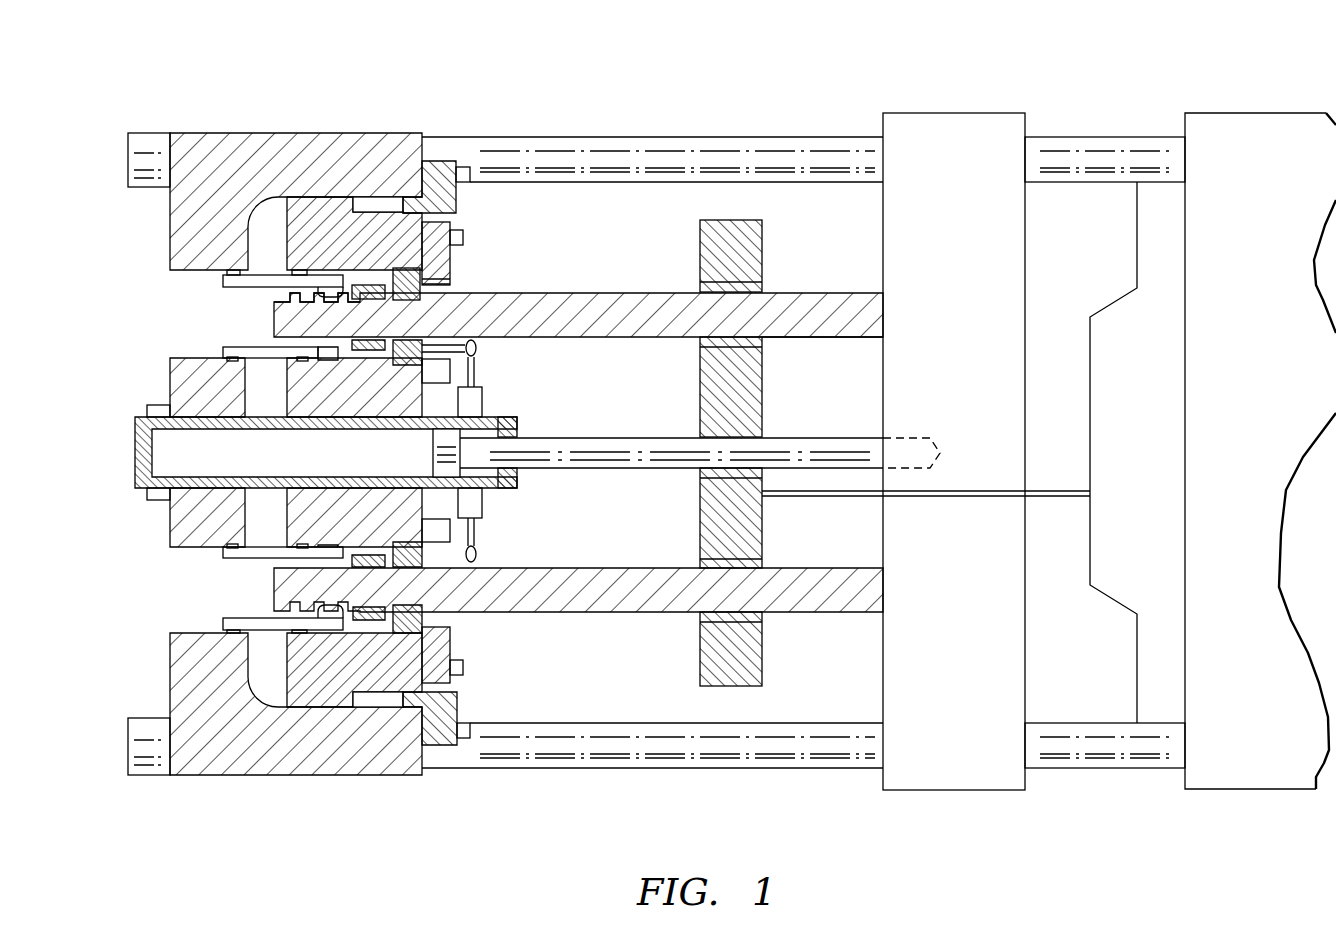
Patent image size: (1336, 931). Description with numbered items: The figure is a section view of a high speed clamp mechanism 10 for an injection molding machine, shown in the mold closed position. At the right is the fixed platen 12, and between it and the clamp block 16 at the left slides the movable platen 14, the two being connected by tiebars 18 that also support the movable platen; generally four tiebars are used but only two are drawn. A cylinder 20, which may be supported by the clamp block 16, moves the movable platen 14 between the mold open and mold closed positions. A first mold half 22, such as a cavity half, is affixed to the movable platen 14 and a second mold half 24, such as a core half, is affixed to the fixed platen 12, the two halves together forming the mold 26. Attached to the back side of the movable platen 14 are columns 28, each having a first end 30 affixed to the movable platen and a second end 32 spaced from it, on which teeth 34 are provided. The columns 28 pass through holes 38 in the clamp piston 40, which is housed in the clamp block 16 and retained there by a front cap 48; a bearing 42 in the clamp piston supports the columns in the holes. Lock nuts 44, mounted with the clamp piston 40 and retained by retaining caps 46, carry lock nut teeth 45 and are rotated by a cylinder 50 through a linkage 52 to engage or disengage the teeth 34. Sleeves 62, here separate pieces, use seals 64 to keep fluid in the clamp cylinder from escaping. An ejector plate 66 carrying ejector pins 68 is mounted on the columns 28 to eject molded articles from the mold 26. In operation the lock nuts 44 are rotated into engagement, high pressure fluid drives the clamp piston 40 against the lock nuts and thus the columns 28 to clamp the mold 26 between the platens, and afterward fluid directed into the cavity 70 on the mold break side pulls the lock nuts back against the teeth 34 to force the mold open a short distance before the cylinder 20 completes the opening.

The high speed clamp mechanism 10 is at (560, 100).
The fixed platen 12 is at (1255, 772).
The movable platen 14 is at (948, 782).
The clamp block 16 is at (218, 140).
The tiebars 18 is at (645, 150).
The cylinder 20 is at (168, 460).
The first mold half 22 is at (1055, 207).
The second mold half 24 is at (1162, 200).
The mold 26 is at (1090, 400).
The column 28 is at (818, 300).
The first end 30 is at (840, 338).
The second end 32 is at (275, 312).
The teeth 34 is at (318, 290).
The holes 38 is at (330, 346).
The clamp piston 40 is at (330, 690).
The bearing 42 is at (470, 350).
The lock nuts 44 is at (455, 262).
The lock nut teeth 45 is at (450, 284).
The retaining caps 46 is at (450, 647).
The front cap 48 is at (438, 165).
The cylinder 50 is at (482, 407).
The linkage 52 is at (480, 555).
The sleeves 62 is at (230, 285).
The seals 64 is at (232, 272).
The ejector plate 66 is at (748, 657).
The ejector pins 68 is at (942, 497).
The cavity 70 is at (373, 203).